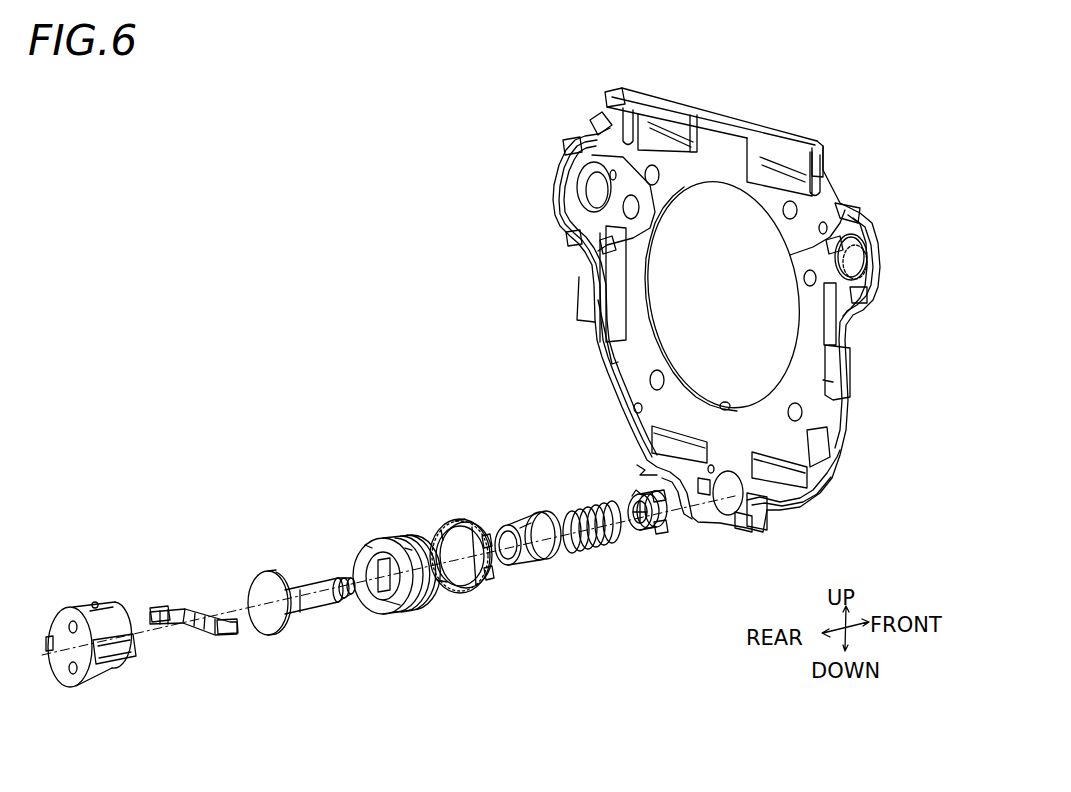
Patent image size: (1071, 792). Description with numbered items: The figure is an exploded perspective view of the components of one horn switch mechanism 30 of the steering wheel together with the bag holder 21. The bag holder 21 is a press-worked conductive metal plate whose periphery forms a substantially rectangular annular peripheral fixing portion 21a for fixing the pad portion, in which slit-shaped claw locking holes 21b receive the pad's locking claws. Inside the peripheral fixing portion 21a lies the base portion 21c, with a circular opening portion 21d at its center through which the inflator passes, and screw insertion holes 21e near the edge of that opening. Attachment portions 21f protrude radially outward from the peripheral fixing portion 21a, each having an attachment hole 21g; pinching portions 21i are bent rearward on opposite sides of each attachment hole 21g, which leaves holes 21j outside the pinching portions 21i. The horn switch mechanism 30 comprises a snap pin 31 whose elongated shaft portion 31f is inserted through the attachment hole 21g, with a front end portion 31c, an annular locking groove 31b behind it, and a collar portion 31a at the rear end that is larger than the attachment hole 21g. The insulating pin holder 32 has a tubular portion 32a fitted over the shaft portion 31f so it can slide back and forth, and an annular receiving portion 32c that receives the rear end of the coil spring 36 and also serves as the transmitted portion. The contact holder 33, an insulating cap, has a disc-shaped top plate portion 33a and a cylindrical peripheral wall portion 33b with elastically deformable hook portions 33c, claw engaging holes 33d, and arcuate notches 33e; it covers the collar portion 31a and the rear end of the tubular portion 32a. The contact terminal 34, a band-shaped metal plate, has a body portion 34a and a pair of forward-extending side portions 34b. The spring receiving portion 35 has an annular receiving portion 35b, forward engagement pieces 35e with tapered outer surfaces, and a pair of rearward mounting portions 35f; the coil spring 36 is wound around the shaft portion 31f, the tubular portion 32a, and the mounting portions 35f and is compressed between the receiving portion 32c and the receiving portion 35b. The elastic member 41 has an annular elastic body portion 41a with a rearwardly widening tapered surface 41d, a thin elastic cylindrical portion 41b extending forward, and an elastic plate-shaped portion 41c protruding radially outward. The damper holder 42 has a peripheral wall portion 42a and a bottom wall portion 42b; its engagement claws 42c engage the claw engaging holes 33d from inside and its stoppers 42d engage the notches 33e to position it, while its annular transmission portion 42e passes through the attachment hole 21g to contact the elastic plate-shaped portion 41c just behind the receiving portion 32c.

The bag holder 21 is at (853, 350).
The peripheral fixing portion 21a is at (612, 373).
The claw locking holes 21b is at (600, 112).
The base portion 21c is at (655, 320).
The opening portion 21d is at (721, 408).
The screw insertion holes 21e is at (783, 210).
The attachment portions 21f is at (578, 166).
The attachment hole 21g is at (590, 188).
The pinching portions 21i is at (610, 238).
The holes 21j is at (575, 147).
The horn switch mechanism 30 is at (378, 492).
The snap pin 31 is at (314, 627).
The collar portion 31a is at (257, 580).
The locking groove 31b is at (310, 587).
The front end portion 31c is at (345, 580).
The shaft portion 31f is at (303, 603).
The pin holder 32 is at (530, 564).
The tubular portion 32a is at (535, 563).
The receiving portion 32c is at (523, 527).
The contact holder 33 is at (90, 611).
The top plate portion 33a is at (57, 630).
The peripheral wall portion 33b is at (70, 608).
The hook portions 33c is at (140, 652).
The claw engaging holes 33d is at (96, 603).
The notches 33e is at (120, 630).
The contact terminal 34 is at (193, 647).
The body portion 34a is at (182, 630).
The side portions 34b is at (168, 615).
The spring receiving portion 35 is at (647, 541).
The receiving portion 35b is at (640, 528).
The engagement pieces 35e is at (680, 522).
The mounting portions 35f is at (632, 500).
The coil spring 36 is at (607, 552).
The elastic member 41 is at (396, 601).
The elastic body portion 41a is at (407, 603).
The elastic cylindrical portion 41b is at (412, 550).
The elastic plate-shaped portion 41c is at (403, 547).
The tapered surface 41d is at (368, 545).
The damper holder 42 is at (461, 586).
The peripheral wall portion 42a is at (472, 588).
The bottom wall portion 42b is at (443, 537).
The engagement claws 42c is at (460, 530).
The stoppers 42d is at (480, 540).
The transmission portion 42e is at (443, 583).